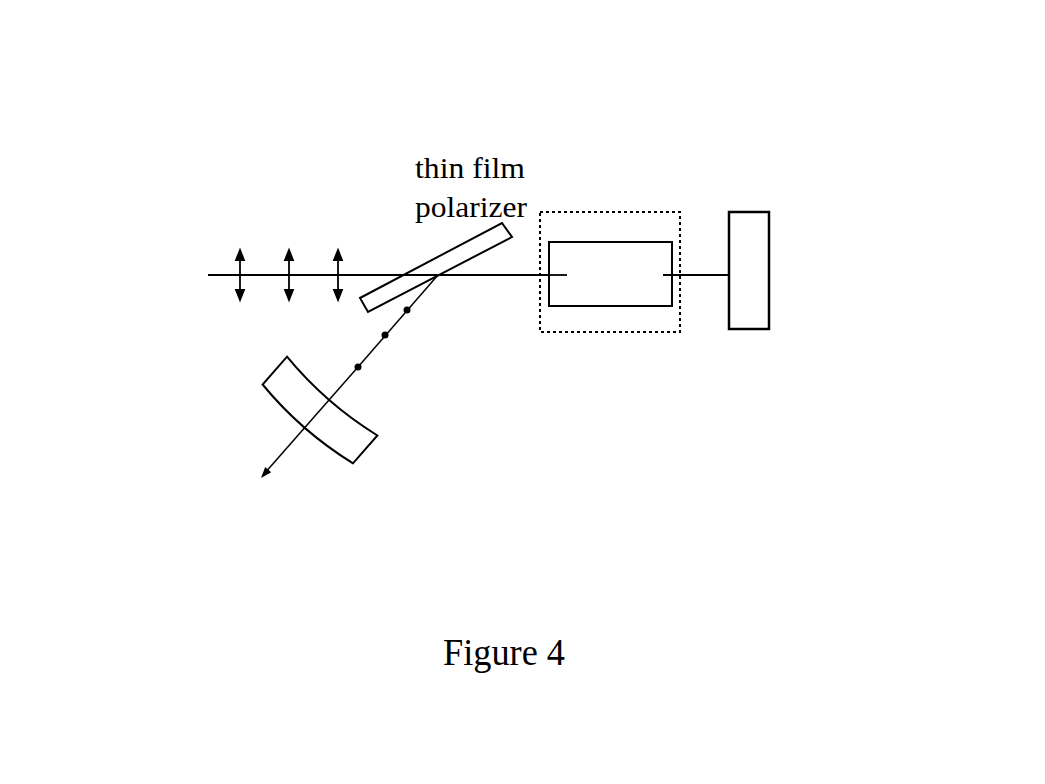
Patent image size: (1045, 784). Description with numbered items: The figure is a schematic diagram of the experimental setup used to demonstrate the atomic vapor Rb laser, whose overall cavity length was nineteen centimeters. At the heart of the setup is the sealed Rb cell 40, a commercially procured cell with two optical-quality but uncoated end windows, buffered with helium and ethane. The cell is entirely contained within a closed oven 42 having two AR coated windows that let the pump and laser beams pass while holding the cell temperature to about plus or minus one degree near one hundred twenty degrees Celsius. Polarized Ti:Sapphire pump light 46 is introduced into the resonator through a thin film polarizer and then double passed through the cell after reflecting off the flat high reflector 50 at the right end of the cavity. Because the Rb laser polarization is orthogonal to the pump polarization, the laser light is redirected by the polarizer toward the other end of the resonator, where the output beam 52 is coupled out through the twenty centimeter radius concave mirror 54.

The polarized Ti:Sapphire pump light 46 is at (230, 276).
The closed oven 42 is at (558, 212).
The sealed Rb cell 40 is at (661, 243).
The flat high reflector 50 is at (725, 241).
The 20 cm radius concave mirror 54 is at (357, 422).
The output beam 52 is at (287, 450).